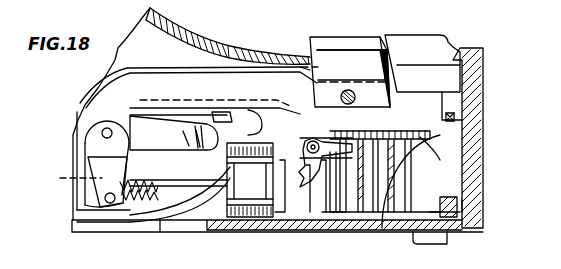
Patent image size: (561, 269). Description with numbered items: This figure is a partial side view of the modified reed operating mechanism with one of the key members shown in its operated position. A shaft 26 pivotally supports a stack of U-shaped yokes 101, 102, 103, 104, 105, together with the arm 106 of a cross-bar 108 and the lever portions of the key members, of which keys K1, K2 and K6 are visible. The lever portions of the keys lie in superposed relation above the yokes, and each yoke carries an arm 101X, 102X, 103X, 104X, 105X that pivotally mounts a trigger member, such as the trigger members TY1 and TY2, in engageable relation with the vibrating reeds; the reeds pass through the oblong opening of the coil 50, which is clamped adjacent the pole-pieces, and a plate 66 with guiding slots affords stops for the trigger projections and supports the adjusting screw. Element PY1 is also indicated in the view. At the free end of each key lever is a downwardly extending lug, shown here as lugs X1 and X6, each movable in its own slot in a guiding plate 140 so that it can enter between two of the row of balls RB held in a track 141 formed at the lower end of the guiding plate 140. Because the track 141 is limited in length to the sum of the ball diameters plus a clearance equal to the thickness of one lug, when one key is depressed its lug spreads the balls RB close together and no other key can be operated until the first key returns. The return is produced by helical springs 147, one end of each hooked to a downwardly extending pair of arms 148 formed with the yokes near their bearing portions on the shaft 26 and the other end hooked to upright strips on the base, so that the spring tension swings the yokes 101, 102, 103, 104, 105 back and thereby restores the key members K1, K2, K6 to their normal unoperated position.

The shaft 26 is at (102, 132).
The coil 50 is at (250, 180).
The plate 66 is at (332, 213).
The U-shaped yoke 101 is at (222, 172).
The U-shaped yoke 102 is at (180, 190).
The U-shaped yoke 103 is at (198, 133).
The U-shaped yoke 104 is at (185, 133).
The U-shaped yoke 105 is at (174, 133).
The arm of cross-bar 106 is at (222, 123).
The cross-bar 108 is at (253, 113).
The guiding plate 140 is at (467, 198).
The track 141 is at (463, 224).
The helical spring 147 is at (132, 206).
The pair of arms 148 is at (103, 197).
The arm 101X is at (345, 220).
The arm 102X is at (360, 213).
The arm 103X is at (377, 213).
The arm 104X is at (413, 230).
The arm 105X is at (433, 222).
The key member K1 is at (345, 62).
The key member K2 is at (327, 42).
The key member K6 is at (413, 40).
The trigger member TY1 is at (308, 212).
The trigger member TY2 is at (308, 145).
The pawl PY1 is at (270, 213).
The balls RB is at (460, 208).
The lug X1 is at (445, 158).
The lug X6 is at (465, 123).